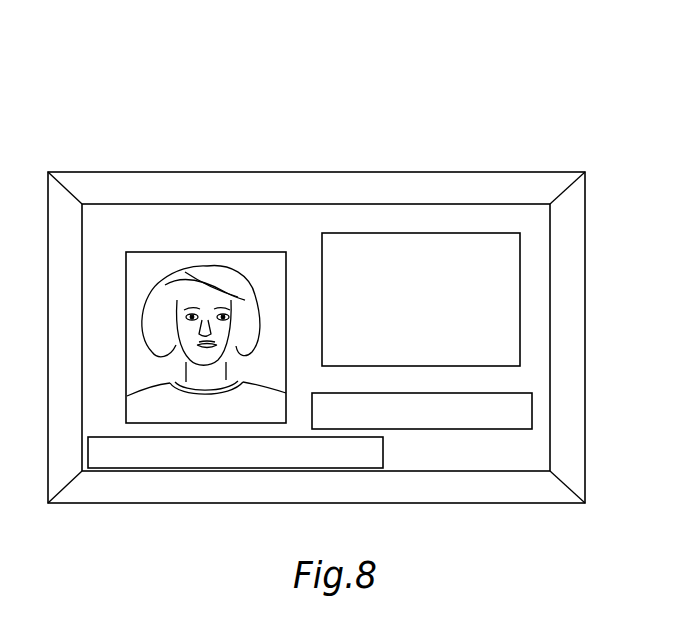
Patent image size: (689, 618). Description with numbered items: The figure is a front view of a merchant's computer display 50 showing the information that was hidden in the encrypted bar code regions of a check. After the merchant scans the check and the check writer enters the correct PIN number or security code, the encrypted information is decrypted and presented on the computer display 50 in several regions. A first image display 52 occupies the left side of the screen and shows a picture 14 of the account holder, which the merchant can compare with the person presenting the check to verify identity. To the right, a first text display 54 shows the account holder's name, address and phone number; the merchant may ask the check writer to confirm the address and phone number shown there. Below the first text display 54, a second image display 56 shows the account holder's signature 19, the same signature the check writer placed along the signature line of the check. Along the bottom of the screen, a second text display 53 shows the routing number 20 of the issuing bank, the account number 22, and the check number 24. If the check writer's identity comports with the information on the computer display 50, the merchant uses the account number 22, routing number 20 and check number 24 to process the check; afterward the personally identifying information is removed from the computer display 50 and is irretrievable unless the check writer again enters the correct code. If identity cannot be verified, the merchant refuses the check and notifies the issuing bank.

The computer display 50 is at (88, 168).
The first image display 52 is at (160, 252).
The picture 14 is at (222, 282).
The first text display 54 is at (424, 233).
The second image display 56 is at (502, 394).
The signature 19 is at (478, 429).
The routing number 20 is at (102, 442).
The second text display 53 is at (117, 440).
The account number 22 is at (287, 457).
The check number 24 is at (376, 453).